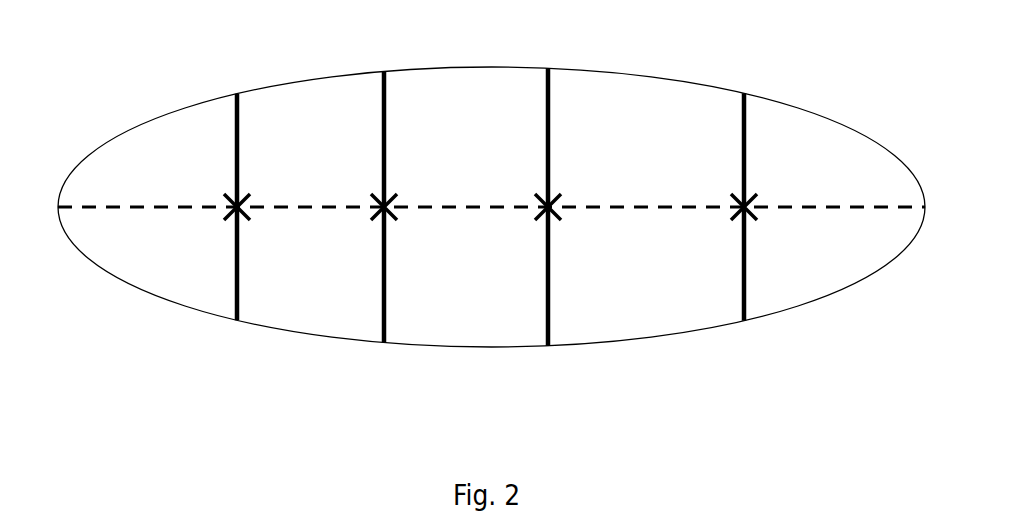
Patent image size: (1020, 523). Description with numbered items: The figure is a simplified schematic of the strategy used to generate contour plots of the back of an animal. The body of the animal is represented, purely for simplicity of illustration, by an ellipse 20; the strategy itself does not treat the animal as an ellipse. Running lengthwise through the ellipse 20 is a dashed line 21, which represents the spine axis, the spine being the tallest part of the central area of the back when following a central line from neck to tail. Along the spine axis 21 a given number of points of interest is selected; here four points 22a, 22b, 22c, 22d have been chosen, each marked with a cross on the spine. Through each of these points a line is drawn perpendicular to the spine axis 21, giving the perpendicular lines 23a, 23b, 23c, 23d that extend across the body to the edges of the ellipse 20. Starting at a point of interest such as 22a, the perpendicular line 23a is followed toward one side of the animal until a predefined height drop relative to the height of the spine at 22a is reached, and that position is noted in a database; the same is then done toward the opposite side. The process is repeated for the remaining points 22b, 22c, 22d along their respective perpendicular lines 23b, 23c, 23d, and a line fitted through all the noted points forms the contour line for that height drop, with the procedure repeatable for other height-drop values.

The ellipse 20 is at (78, 160).
The spine axis 21 is at (138, 207).
The point of interest 22a is at (234, 202).
The point of interest 22b is at (381, 202).
The point of interest 22c is at (545, 202).
The point of interest 22d is at (741, 202).
The perpendicular line 23a is at (247, 290).
The perpendicular line 23b is at (393, 290).
The perpendicular line 23c is at (557, 290).
The perpendicular line 23d is at (753, 290).